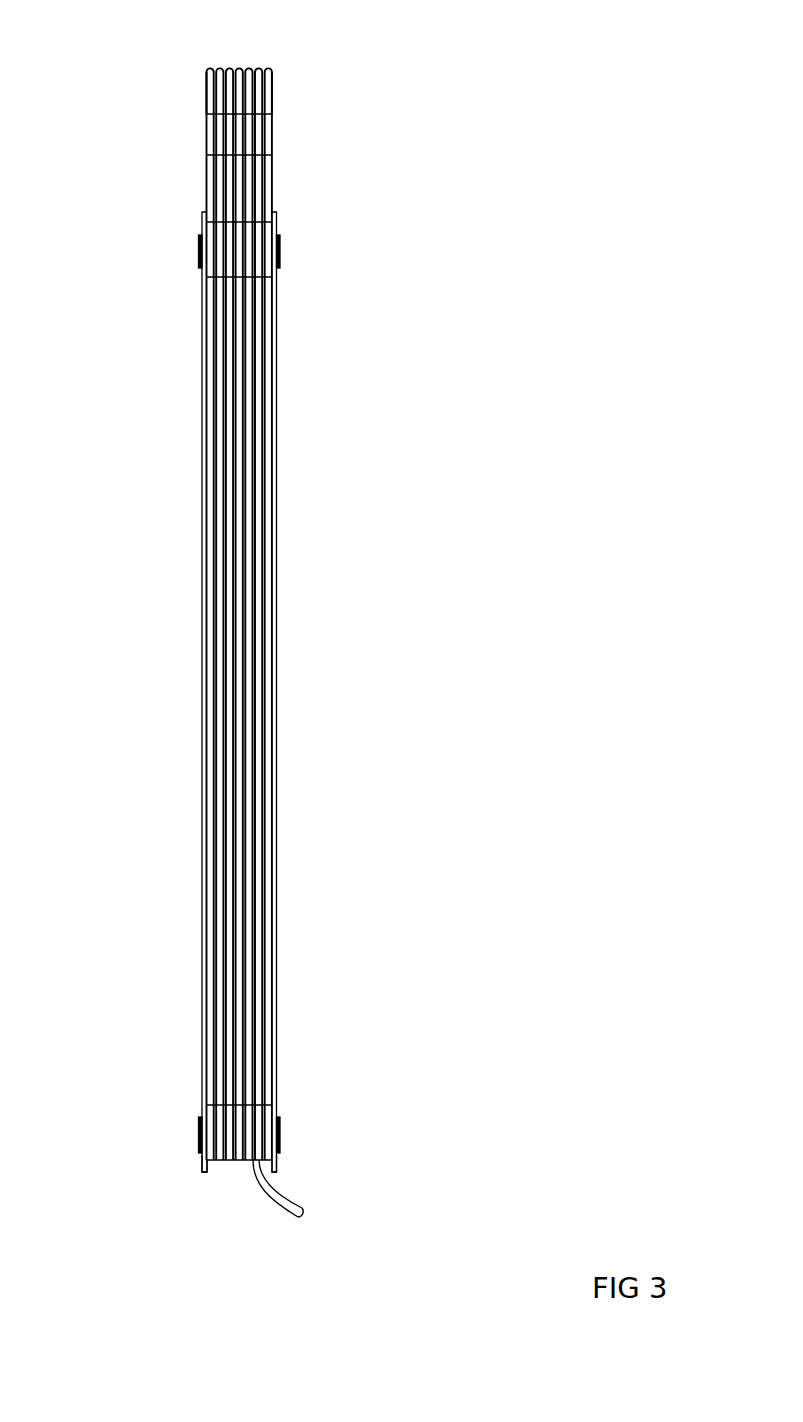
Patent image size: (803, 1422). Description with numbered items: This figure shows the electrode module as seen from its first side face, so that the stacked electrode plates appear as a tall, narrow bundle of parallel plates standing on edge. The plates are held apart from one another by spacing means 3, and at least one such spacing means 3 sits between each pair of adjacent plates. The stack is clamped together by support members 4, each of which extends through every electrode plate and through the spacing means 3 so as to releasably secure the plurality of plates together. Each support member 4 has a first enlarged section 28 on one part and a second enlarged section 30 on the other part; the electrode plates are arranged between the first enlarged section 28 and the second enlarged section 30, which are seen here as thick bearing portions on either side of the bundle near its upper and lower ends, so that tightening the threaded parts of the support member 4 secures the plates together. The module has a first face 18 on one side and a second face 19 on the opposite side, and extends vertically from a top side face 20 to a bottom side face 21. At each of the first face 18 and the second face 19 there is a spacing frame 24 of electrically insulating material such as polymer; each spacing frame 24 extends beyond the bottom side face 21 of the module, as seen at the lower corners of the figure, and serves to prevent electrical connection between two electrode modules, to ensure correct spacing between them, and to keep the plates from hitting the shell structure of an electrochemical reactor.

The spacing means 3 is at (287, 1206).
The support member 4 is at (294, 252).
The first face 18 is at (200, 613).
The second face 19 is at (277, 613).
The top side face 20 is at (243, 68).
The bottom side face 21 is at (238, 1162).
The spacing frame 24 is at (198, 1173).
The first enlarged section 28 is at (199, 250).
The second enlarged section 30 is at (280, 257).